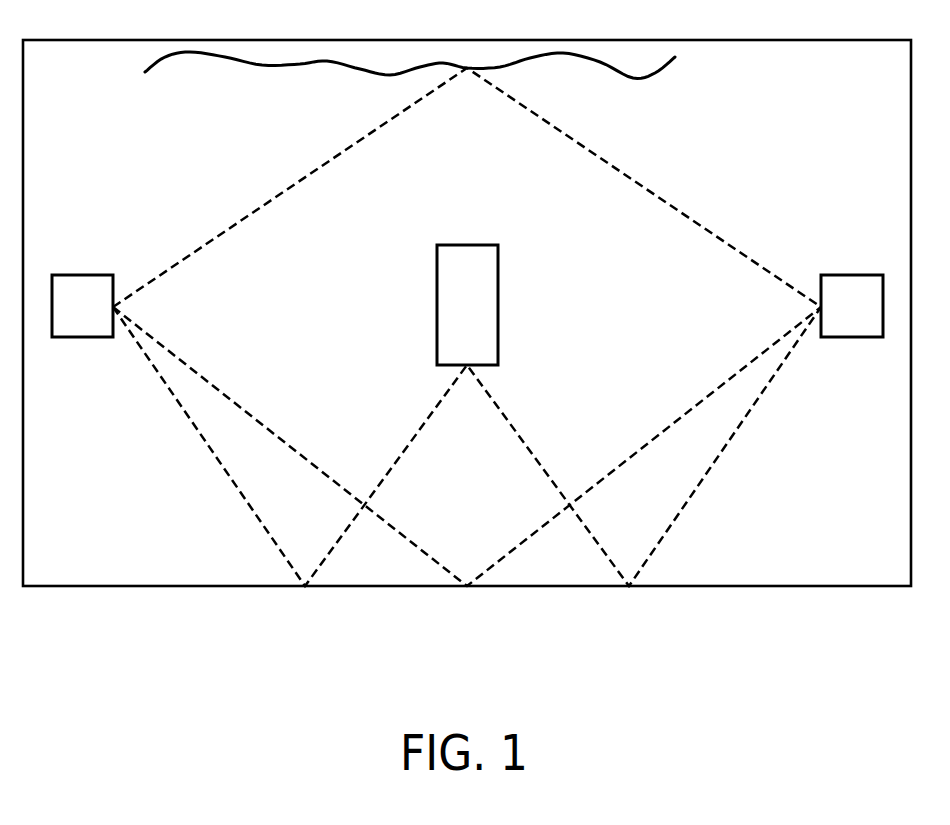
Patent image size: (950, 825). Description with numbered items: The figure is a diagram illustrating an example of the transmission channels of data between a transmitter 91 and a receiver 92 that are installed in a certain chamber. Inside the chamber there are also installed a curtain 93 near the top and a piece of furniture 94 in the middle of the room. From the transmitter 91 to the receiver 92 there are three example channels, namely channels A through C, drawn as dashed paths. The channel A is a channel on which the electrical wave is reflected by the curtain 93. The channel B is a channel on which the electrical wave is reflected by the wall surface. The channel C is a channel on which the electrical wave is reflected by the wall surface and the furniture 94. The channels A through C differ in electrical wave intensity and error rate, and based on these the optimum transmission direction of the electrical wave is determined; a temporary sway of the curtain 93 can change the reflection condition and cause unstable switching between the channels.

The transmitter 91 is at (88, 275).
The receiver 92 is at (850, 275).
The curtain 93 is at (191, 56).
The furniture 94 is at (449, 245).
The channel A is at (310, 172).
The channel B is at (249, 412).
The channel C is at (536, 458).